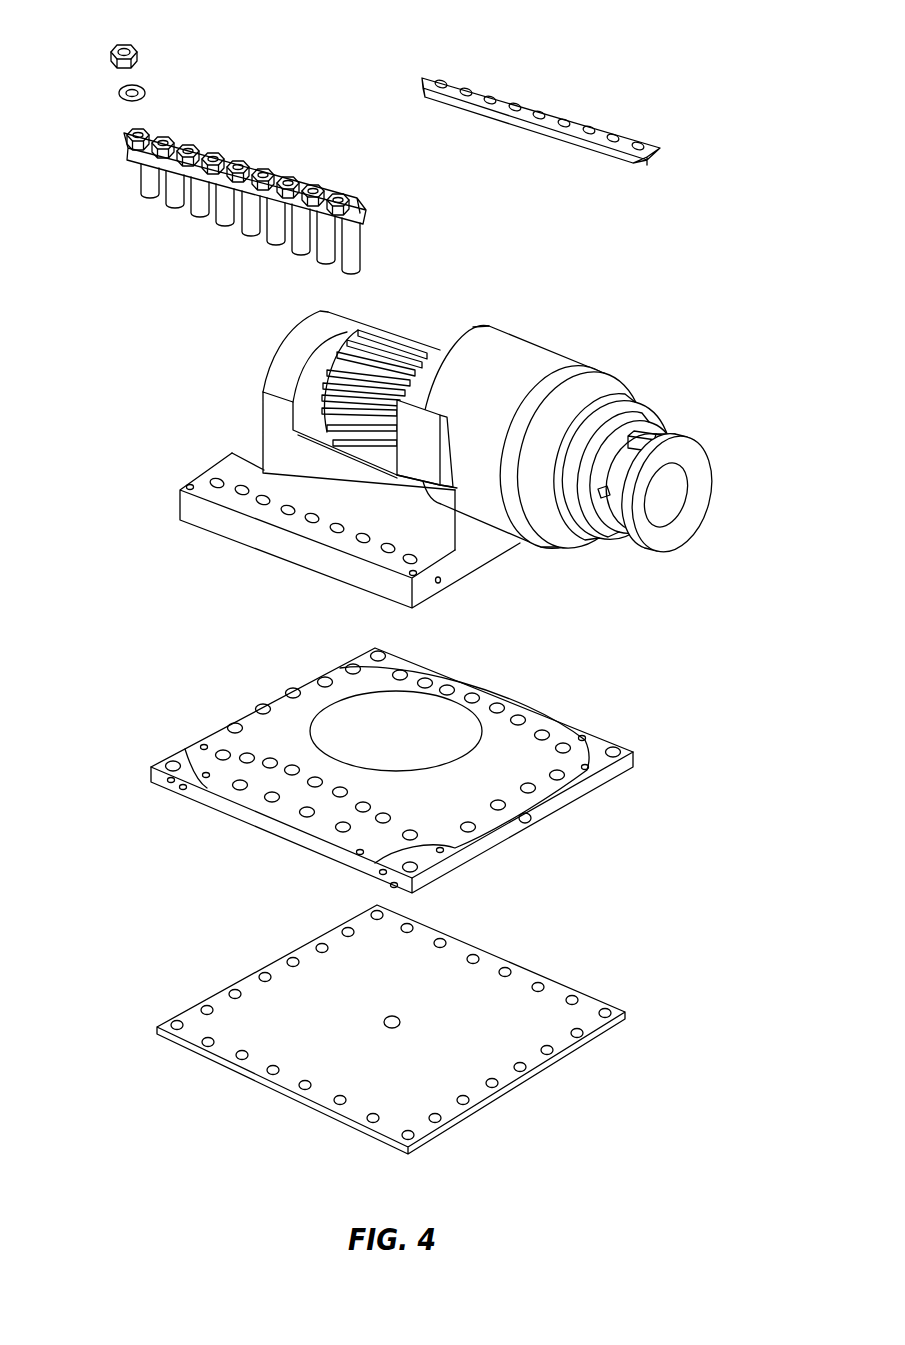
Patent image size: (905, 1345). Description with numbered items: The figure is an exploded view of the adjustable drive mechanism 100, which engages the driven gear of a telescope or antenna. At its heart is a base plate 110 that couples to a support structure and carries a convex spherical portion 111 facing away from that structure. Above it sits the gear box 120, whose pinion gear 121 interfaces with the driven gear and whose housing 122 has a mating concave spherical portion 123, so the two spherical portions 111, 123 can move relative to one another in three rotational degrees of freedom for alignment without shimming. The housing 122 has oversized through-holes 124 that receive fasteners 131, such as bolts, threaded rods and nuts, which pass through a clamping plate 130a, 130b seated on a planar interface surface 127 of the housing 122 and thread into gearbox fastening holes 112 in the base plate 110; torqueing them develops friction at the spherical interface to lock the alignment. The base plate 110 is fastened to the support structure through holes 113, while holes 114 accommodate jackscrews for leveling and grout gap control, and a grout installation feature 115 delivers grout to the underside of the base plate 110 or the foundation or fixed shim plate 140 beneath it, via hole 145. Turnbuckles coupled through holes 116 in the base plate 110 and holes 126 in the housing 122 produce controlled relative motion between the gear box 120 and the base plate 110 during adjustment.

The adjustable drive mechanism 100 is at (708, 58).
The base plate 110 is at (400, 781).
The spherical portion 111 is at (287, 712).
The gearbox fastening holes 112 is at (310, 785).
The holes 113 is at (265, 800).
The holes 114 is at (205, 745).
The grout installation feature 115 is at (528, 824).
The holes 116 is at (390, 888).
The gear box 120 is at (418, 452).
The pinion gear 121 is at (412, 333).
The housing 122 is at (257, 375).
The spherical portion 123 is at (324, 539).
The through-holes 124 is at (313, 523).
The holes 126 is at (440, 583).
The interface surface 127 is at (247, 502).
The clamping plate 130a is at (291, 172).
The clamping plate 130b is at (618, 160).
The fasteners 131 is at (250, 240).
The foundation or fixed shim plate 140 is at (416, 1029).
The hole 145 is at (404, 1021).